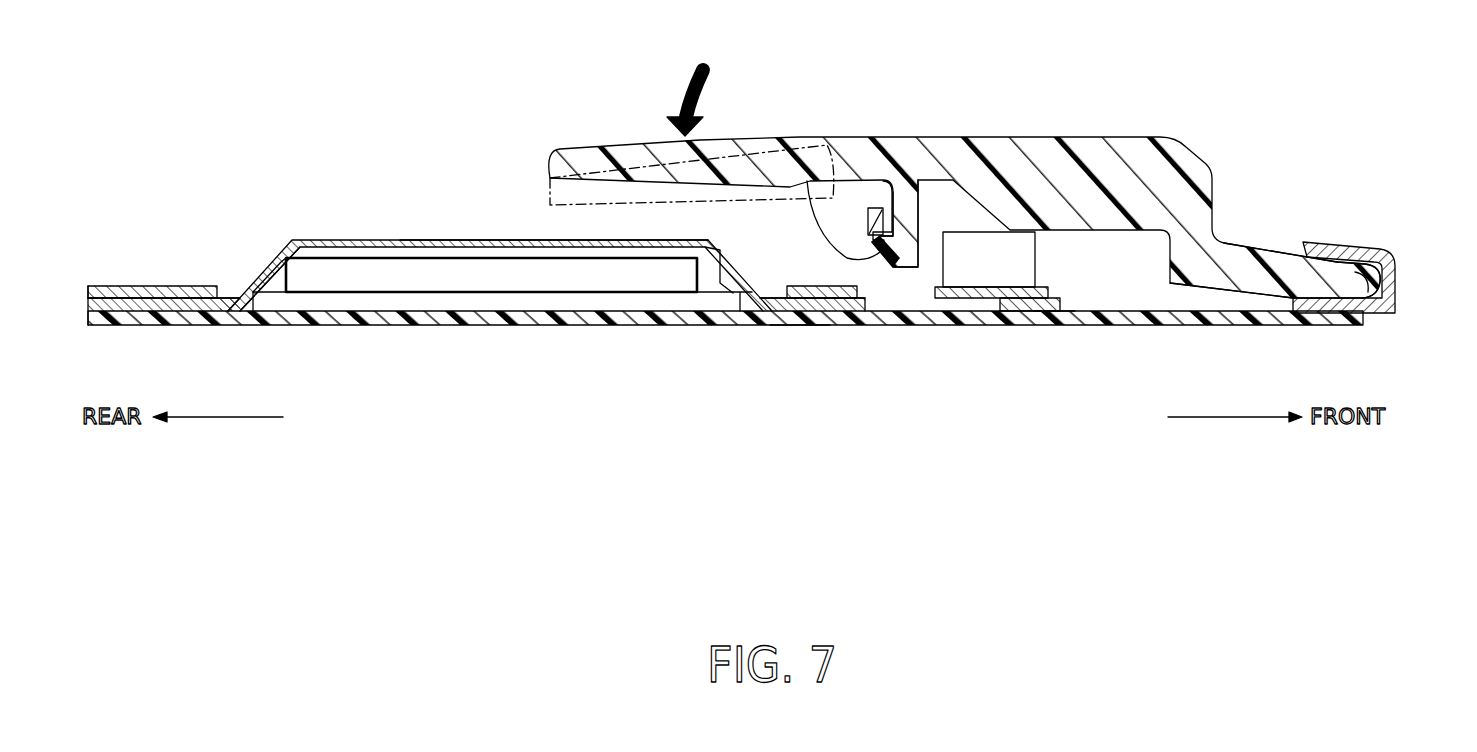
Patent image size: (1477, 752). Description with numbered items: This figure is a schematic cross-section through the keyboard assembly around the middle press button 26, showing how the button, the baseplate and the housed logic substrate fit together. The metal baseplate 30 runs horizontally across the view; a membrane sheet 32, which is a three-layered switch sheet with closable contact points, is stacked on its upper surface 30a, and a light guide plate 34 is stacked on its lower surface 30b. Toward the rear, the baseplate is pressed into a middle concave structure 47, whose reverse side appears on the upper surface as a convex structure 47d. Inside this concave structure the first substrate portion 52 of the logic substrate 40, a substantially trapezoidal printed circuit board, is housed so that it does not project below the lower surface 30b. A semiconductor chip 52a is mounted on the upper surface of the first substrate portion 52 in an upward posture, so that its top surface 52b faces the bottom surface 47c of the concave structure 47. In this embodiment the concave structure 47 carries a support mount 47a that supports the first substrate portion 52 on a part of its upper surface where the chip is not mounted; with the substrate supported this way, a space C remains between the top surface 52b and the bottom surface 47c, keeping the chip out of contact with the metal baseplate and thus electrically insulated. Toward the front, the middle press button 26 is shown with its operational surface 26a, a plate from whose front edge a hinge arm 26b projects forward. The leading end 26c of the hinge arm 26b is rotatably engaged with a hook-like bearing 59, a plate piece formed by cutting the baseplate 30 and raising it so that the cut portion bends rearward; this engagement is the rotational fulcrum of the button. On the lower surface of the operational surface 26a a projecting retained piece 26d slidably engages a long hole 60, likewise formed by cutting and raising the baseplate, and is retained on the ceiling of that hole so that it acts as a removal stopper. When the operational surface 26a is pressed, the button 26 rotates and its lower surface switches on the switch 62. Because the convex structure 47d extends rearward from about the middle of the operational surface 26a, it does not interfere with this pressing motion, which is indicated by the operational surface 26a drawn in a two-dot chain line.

The middle press button 26 is at (996, 235).
The operational surface 26a is at (640, 158).
The hinge arm 26b is at (1247, 256).
The leading end 26c is at (1396, 283).
The retained piece 26d is at (888, 269).
The baseplate 30 is at (160, 306).
The upper surface 30a is at (1035, 288).
The lower surface 30b is at (800, 327).
The membrane sheet 32 is at (105, 290).
The light guide plate 34 is at (1057, 313).
The logic substrate 40 is at (502, 301).
The middle concave structure 47 is at (479, 278).
The support mount 47a is at (258, 318).
The bottom surface 47c is at (625, 250).
The convex structure 47d is at (487, 240).
The first substrate portion 52 is at (502, 259).
The semiconductor chip 52a is at (535, 294).
The top surface 52b is at (313, 246).
The hook-like bearing 59 is at (1325, 246).
The long hole 60 is at (812, 212).
The switch 62 is at (1015, 281).
The space C is at (345, 252).